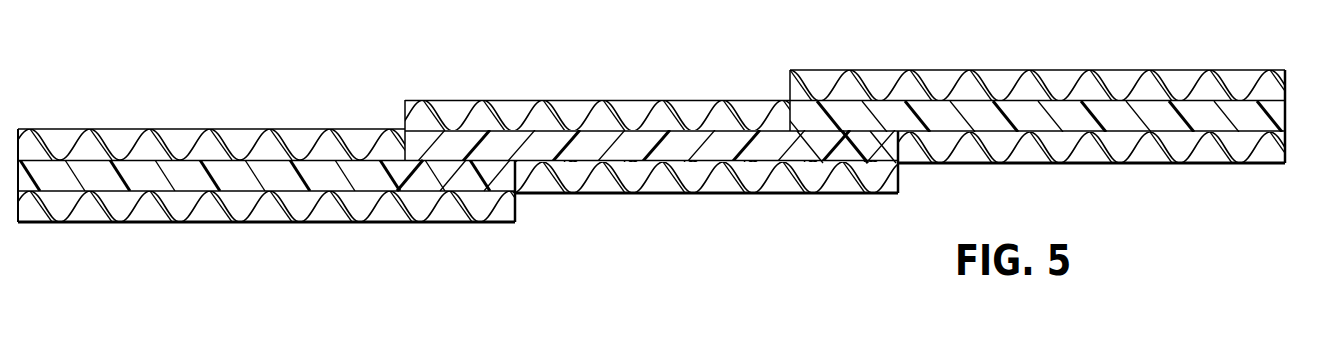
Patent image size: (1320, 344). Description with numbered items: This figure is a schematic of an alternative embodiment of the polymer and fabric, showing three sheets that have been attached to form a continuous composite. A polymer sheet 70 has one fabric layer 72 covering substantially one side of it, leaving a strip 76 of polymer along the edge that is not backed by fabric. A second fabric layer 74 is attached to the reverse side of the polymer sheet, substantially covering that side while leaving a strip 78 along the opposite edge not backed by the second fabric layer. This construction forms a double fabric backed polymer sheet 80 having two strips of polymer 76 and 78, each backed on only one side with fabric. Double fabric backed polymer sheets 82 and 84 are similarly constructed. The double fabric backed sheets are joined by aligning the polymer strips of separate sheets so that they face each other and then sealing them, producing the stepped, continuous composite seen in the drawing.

The polymer sheet 70 is at (803, 152).
The fabric layer 72 is at (653, 100).
The second fabric layer 74 is at (702, 194).
The strip 76 is at (900, 171).
The strip 78 is at (427, 163).
The double fabric backed polymer sheet 80 is at (794, 155).
The double fabric backed polymer sheet 82 is at (910, 57).
The double fabric backed polymer sheet 84 is at (181, 124).